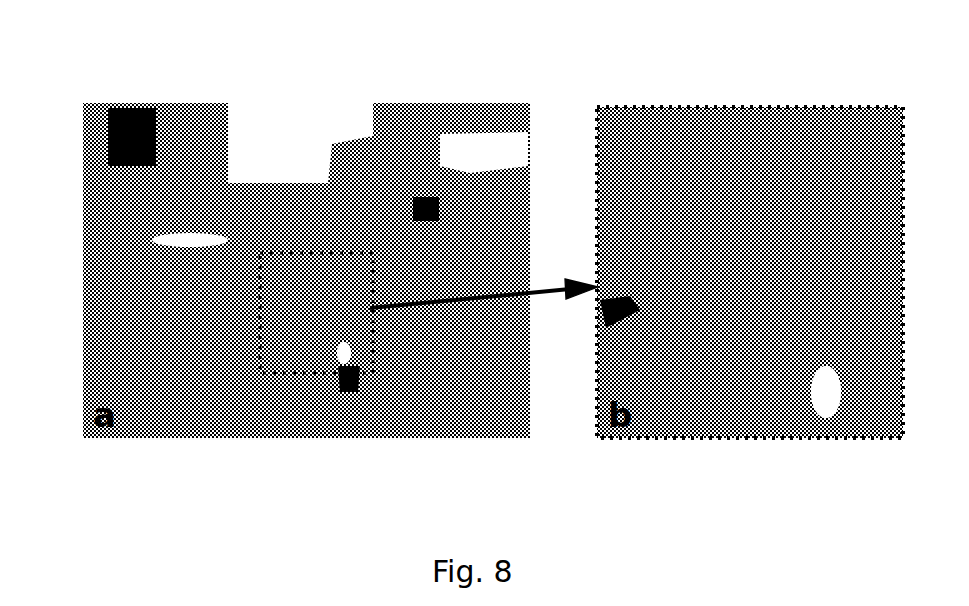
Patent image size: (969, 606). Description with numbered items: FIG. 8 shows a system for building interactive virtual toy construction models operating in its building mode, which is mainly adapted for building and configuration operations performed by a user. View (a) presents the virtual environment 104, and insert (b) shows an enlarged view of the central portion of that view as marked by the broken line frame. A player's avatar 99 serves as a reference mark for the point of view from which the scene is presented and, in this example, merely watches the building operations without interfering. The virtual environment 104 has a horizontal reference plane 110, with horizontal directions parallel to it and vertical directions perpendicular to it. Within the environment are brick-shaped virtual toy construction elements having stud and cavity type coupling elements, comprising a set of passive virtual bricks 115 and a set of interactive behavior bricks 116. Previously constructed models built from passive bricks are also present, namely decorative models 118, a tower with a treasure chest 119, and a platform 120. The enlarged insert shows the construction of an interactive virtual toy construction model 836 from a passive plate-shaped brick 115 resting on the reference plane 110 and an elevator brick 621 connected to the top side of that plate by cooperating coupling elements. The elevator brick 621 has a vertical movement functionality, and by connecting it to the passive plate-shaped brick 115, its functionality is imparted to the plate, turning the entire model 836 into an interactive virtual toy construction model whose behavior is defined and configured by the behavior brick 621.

The player's avatar 99 is at (345, 387).
The virtual environment 104 is at (162, 150).
The horizontal reference plane 110 is at (140, 310).
The passive virtual bricks 115 is at (208, 272).
The interactive behavior bricks 116 is at (192, 340).
The decorative models 118 is at (358, 255).
The tower with a treasure chest 119 is at (370, 250).
The platform 120 is at (387, 327).
The elevator brick 621 is at (705, 178).
The interactive virtual toy construction model 836 is at (292, 262).